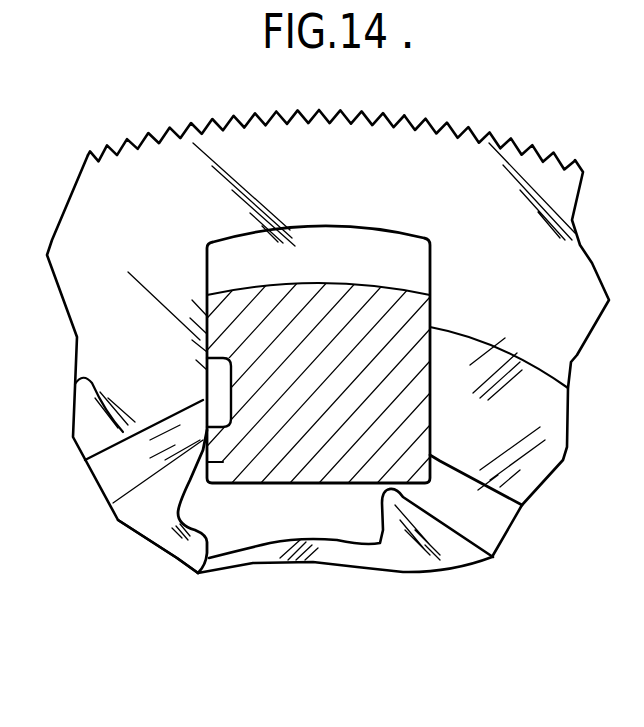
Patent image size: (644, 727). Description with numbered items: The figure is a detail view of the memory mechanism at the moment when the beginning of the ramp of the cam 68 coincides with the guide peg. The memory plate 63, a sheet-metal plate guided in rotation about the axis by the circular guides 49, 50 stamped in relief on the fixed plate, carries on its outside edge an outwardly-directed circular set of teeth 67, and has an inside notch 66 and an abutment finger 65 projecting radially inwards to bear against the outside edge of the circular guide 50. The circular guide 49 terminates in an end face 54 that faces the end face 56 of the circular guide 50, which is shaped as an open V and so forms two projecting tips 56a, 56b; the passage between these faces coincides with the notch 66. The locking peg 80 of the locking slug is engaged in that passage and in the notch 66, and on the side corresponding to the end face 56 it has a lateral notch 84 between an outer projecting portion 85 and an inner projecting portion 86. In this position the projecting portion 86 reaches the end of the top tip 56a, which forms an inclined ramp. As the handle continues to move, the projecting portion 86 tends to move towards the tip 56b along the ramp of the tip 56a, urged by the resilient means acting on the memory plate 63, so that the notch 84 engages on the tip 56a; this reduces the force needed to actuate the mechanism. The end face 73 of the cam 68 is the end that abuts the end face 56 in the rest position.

The memory plate 63 is at (167, 172).
The outwardly-directed circular set of teeth 67 is at (434, 123).
The inside notch 66 is at (370, 227).
The locking peg 80 is at (330, 318).
The projecting lateral portion 85 is at (230, 322).
The lateral notch 84 is at (235, 383).
The abutment finger 65 is at (168, 397).
The end face 54 is at (430, 432).
The circular guide 49 is at (530, 468).
The circular guide 50 is at (160, 520).
The end face 56 is at (189, 487).
The projecting tip 56a is at (200, 453).
The projecting tip 56b is at (205, 552).
The projecting lateral portion 86 is at (223, 462).
The cam 68 is at (442, 535).
The end face 73 is at (390, 500).